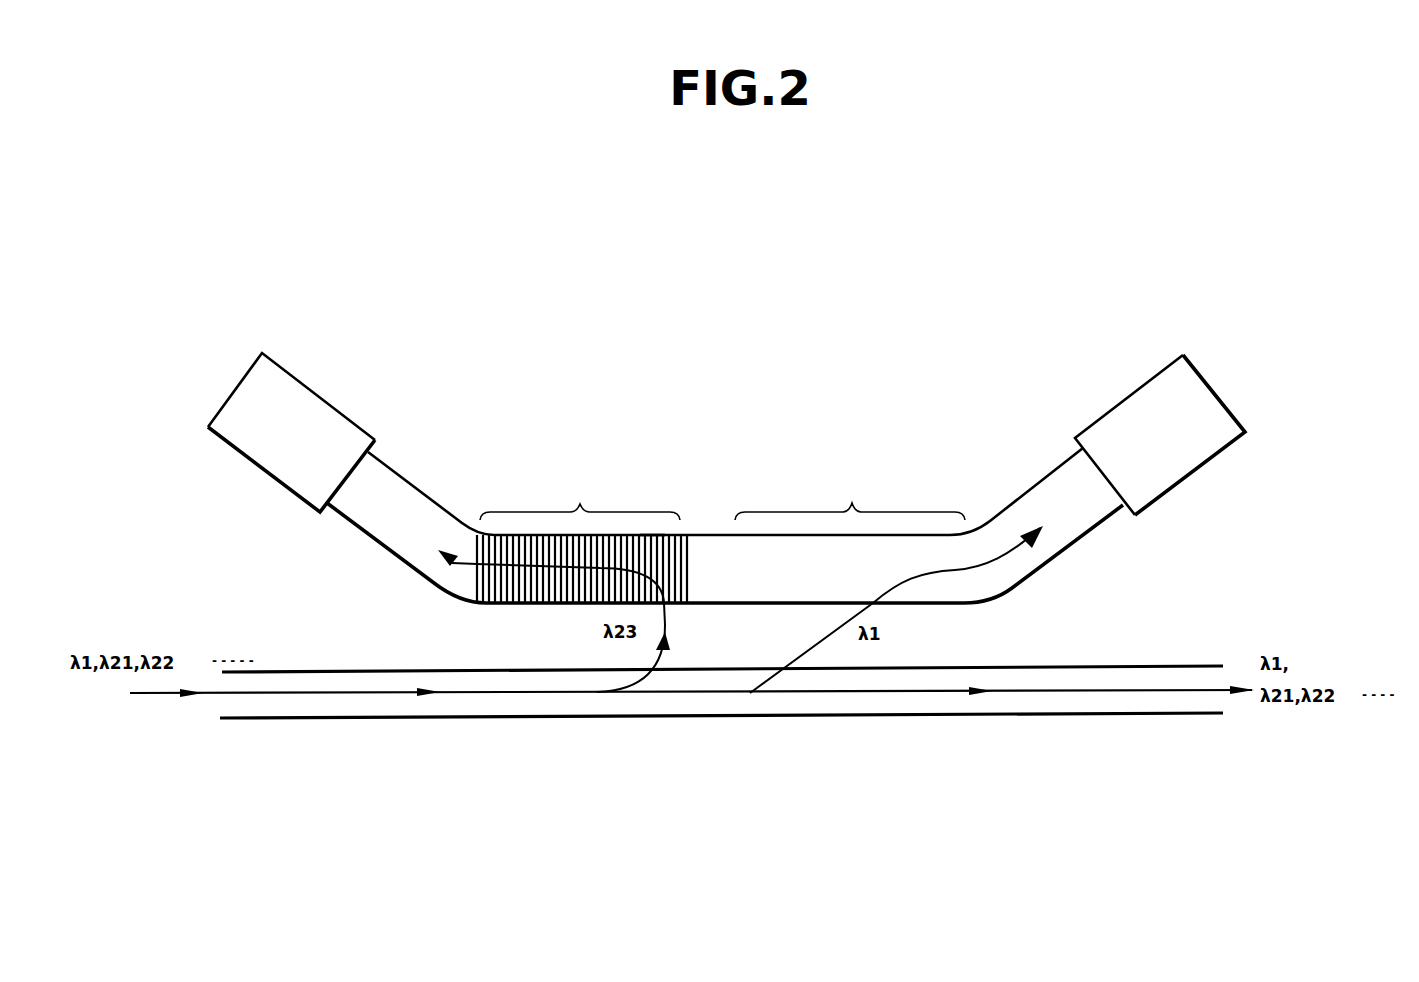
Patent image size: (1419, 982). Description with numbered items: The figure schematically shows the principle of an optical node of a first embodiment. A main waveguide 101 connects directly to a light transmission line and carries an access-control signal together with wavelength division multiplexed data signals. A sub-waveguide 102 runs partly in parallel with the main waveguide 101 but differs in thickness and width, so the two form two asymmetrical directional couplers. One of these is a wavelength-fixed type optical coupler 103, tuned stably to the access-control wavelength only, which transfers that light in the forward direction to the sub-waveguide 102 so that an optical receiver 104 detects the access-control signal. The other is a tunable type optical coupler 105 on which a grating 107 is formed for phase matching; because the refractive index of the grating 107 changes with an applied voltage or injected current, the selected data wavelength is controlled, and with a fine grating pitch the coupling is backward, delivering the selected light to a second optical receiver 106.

The main waveguide 101 is at (300, 720).
The sub-waveguide 102 is at (413, 485).
The wavelength-fixed type optical coupler 103 is at (850, 493).
The optical receiver 104 is at (1115, 407).
The tunable type optical coupler 105 is at (582, 534).
The optical receiver 106 is at (330, 408).
The grating 107 is at (652, 535).